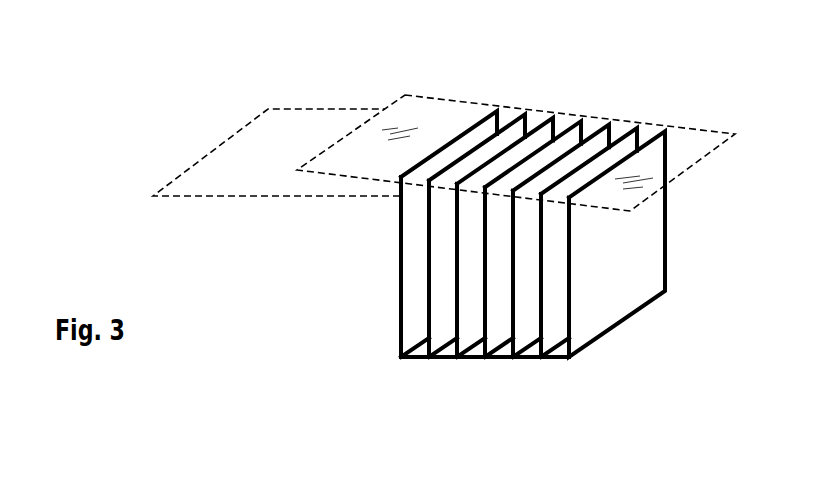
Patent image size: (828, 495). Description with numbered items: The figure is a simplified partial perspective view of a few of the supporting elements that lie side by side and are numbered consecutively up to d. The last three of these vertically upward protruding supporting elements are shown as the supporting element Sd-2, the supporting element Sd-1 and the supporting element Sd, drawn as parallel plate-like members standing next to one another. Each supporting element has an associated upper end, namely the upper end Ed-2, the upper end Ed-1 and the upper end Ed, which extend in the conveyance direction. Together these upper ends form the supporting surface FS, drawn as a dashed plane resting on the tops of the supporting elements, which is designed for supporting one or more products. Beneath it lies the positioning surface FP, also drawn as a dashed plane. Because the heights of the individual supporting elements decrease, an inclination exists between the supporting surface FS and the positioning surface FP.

The positioning surface FP is at (237, 162).
The supporting surface FS is at (347, 155).
The upper end Ed-2 is at (542, 167).
The upper end Ed-1 is at (598, 148).
The upper end Ed is at (627, 150).
The supporting element Sd is at (630, 264).
The supporting element Sd-1 is at (556, 289).
The supporting element Sd-2 is at (527, 323).